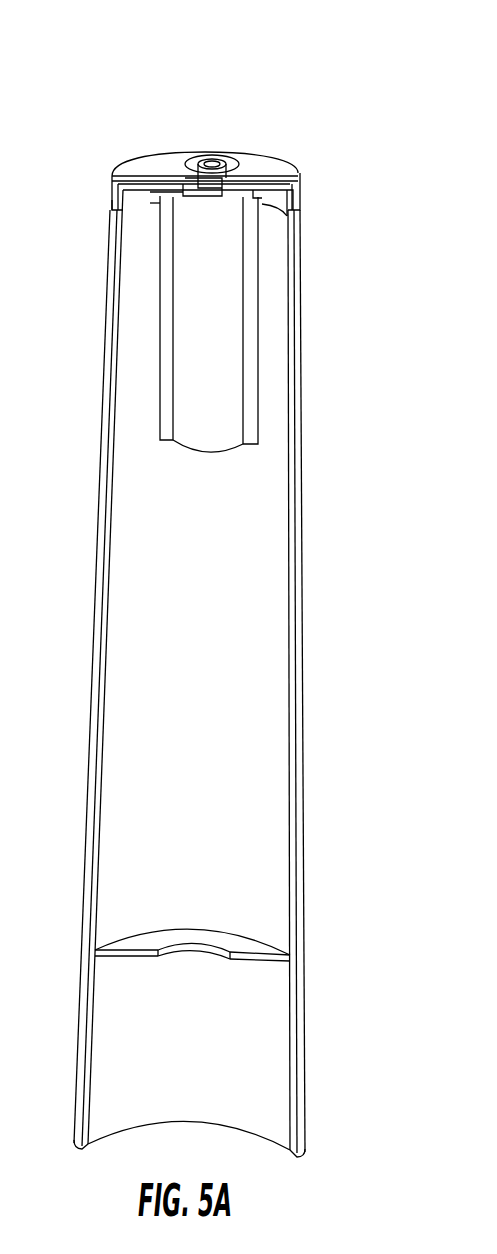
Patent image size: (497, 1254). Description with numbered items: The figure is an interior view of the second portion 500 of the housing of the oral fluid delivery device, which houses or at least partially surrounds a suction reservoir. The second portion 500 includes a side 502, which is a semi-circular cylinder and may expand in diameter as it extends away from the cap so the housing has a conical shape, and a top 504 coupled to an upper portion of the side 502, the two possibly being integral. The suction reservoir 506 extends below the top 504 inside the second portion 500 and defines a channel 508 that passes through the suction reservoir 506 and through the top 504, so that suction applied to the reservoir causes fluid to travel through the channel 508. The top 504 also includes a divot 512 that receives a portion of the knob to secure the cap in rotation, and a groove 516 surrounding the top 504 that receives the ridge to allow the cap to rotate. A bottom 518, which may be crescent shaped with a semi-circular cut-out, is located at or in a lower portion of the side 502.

The second portion 500 is at (352, 262).
The side 502 is at (265, 655).
The top 504 is at (278, 165).
The suction reservoir 506 is at (222, 388).
The channel 508 is at (212, 163).
The divot 512 is at (187, 180).
The groove 516 is at (106, 210).
The bottom 518 is at (258, 952).